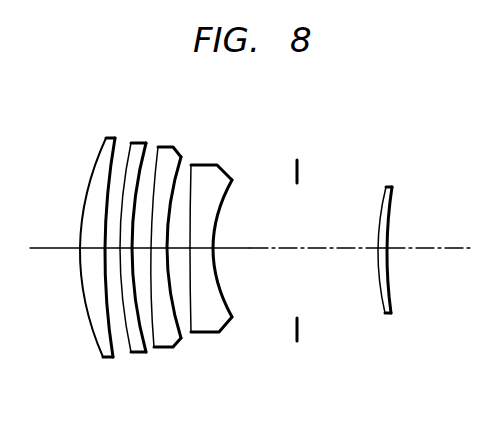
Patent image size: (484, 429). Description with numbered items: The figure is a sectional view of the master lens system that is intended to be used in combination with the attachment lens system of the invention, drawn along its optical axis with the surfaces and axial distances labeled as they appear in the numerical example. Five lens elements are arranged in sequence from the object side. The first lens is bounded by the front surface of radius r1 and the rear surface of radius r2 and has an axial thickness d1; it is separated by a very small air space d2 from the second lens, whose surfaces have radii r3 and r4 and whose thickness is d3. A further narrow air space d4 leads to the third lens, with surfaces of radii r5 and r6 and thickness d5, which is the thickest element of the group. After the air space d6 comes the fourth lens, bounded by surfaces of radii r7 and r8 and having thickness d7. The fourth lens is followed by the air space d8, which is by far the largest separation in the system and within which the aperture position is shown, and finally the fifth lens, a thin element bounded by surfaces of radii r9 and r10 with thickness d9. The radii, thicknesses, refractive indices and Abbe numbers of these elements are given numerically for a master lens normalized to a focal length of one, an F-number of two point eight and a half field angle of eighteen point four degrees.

The radius of curvature of first surface r1 is at (98, 160).
The radius of curvature of second surface r2 is at (116, 138).
The radius of curvature of third surface r3 is at (132, 143).
The radius of curvature of fourth surface r4 is at (147, 143).
The radius of curvature of fifth surface r5 is at (158, 147).
The radius of curvature of sixth surface r6 is at (182, 158).
The radius of curvature of seventh surface r7 is at (193, 166).
The radius of curvature of eighth surface r8 is at (234, 186).
The radius of curvature of ninth surface r9 is at (381, 200).
The radius of curvature of tenth surface r10 is at (391, 208).
The thickness of first lens d1 is at (83, 250).
The airspace between first and second lenses d2 is at (118, 345).
The thickness of second lens d3 is at (139, 352).
The airspace between second and third lenses d4 is at (150, 350).
The thickness of third lens d5 is at (152, 249).
The airspace between third and fourth lenses d6 is at (186, 330).
The thickness of fourth lens d7 is at (198, 250).
The airspace between fourth and fifth lenses d8 is at (327, 250).
The thickness of fifth lens d9 is at (386, 265).